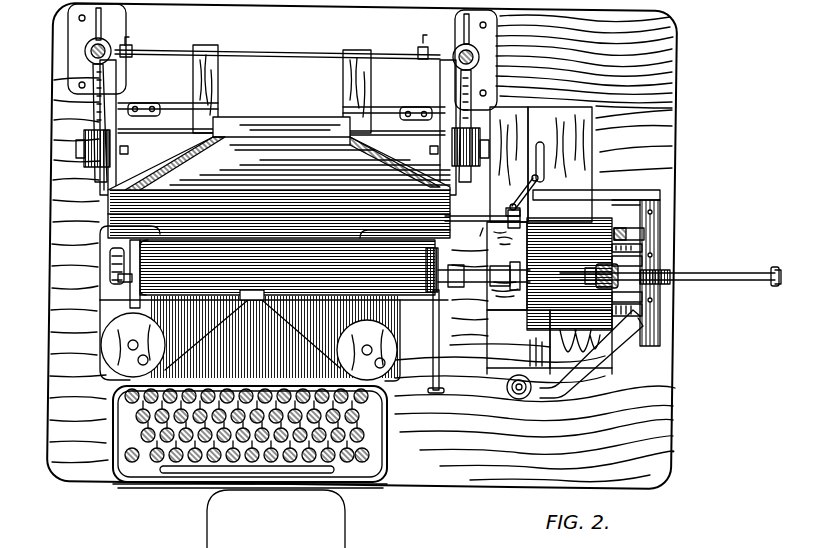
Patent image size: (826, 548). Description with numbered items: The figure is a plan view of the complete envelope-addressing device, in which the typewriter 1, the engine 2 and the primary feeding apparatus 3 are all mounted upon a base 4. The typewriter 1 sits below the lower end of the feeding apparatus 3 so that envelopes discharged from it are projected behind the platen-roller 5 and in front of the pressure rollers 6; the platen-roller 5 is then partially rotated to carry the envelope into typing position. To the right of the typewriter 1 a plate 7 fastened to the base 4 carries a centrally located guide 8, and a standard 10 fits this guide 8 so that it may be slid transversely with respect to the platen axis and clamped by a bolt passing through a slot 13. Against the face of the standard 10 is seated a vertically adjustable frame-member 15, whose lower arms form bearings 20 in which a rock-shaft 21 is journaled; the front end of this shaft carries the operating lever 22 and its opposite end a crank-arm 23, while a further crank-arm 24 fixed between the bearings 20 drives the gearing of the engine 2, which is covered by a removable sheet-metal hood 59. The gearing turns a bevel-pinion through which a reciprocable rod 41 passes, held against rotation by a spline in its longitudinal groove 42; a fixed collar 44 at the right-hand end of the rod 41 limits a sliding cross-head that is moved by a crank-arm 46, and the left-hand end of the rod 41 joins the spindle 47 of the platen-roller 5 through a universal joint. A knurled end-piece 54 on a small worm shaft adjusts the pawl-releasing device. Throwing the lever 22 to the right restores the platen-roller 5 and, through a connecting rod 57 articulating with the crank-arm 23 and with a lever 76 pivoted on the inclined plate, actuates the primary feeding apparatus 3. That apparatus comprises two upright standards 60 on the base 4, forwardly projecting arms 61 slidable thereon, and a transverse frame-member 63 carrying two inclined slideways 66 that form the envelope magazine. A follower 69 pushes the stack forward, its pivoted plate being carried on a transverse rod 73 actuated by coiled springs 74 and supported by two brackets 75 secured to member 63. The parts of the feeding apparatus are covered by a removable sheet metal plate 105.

The typewriter 1 is at (358, 471).
The engine 2 is at (630, 293).
The primary feeding apparatus 3 is at (110, 186).
The base 4 is at (660, 444).
The platen-roller 5 is at (130, 290).
The pressure rollers 6 is at (100, 240).
The plate 7 is at (549, 342).
The guide 8 is at (544, 138).
The standard 10 is at (495, 308).
The slot 13 is at (545, 178).
The frame-member 15 is at (643, 230).
The bearings 20 is at (663, 233).
The rock-shaft 21 is at (656, 188).
The operating lever 22 is at (540, 392).
The crank-arm 23 is at (640, 183).
The crank-arm 24 is at (660, 246).
The reciprocable rod 41 is at (753, 285).
The longitudinal groove 42 is at (732, 273).
The fixed collar 44 is at (780, 276).
The crank-arm 46 is at (662, 264).
The spindle 47 is at (107, 271).
The knurled end-piece 54 is at (668, 192).
The connecting rod 57 is at (522, 158).
The sheet-metal hood 59 is at (600, 380).
The upright standards 60 is at (92, 46).
The forwardly projecting arms 61 is at (90, 73).
The transverse frame-member 63 is at (172, 112).
The slideways 66 is at (193, 66).
The follower 69 is at (131, 138).
The transverse rod 73 is at (395, 140).
The coiled springs 74 is at (427, 52).
The brackets 75 is at (423, 113).
The lever 76 is at (465, 216).
The removable sheet metal plate 105 is at (107, 213).